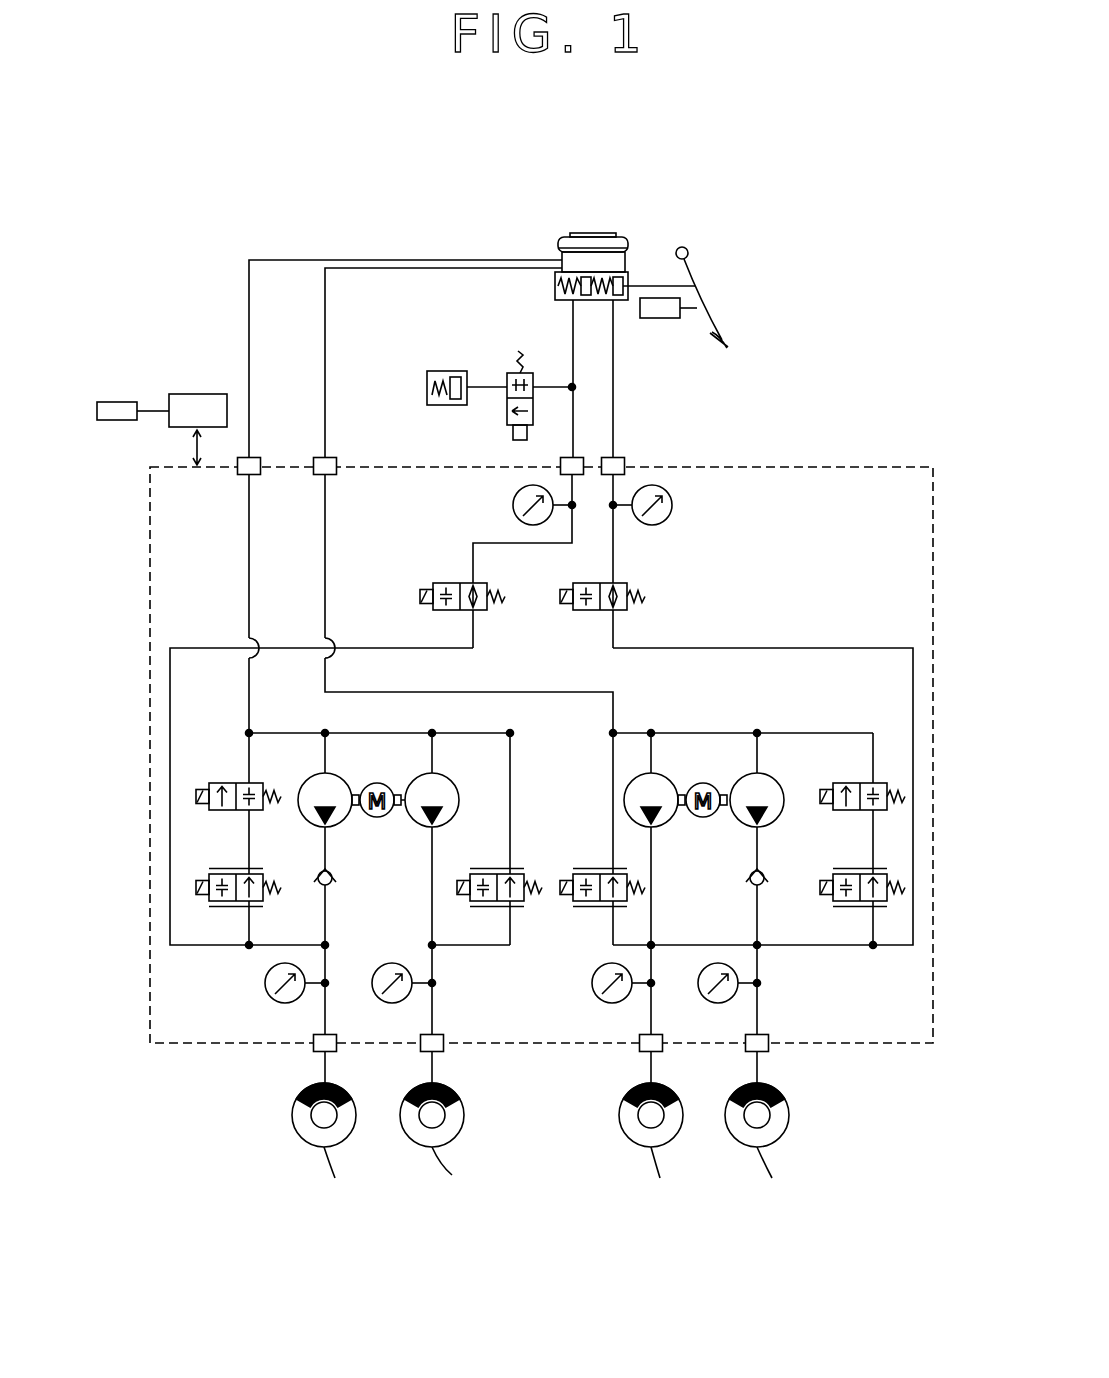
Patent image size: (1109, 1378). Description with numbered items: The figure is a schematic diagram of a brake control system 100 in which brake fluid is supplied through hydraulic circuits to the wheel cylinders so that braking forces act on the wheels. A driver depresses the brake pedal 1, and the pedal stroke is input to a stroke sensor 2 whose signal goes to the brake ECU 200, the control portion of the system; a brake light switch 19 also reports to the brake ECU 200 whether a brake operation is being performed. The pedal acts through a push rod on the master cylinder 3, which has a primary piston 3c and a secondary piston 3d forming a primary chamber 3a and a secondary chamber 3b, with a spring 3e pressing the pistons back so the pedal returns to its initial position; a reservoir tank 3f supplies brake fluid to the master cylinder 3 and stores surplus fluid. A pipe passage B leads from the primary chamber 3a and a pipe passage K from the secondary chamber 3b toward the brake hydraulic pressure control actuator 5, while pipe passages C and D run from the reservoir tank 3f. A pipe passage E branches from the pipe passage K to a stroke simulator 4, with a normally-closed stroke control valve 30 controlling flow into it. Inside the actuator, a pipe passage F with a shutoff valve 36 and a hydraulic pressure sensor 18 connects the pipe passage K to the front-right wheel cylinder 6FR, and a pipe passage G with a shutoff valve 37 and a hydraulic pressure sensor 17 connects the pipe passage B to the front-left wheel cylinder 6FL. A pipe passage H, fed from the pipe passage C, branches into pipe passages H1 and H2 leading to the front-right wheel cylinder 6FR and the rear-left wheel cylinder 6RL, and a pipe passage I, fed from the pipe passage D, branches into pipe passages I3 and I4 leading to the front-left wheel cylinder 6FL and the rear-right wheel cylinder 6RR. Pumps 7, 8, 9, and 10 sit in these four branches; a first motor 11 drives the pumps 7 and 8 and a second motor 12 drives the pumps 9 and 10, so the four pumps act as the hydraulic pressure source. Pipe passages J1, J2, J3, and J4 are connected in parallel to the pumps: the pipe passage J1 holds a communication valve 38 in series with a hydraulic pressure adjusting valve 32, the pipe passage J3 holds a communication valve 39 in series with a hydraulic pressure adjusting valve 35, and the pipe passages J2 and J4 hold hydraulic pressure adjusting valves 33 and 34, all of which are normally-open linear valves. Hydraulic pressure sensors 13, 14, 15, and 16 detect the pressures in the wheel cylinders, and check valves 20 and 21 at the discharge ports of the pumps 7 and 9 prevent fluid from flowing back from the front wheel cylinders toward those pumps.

The brake control system 100 is at (813, 192).
The brake pedal 1 is at (730, 343).
The stroke sensor 2 is at (672, 318).
The master cylinder 3 is at (608, 271).
The primary chamber 3a is at (612, 300).
The secondary chamber 3b is at (558, 290).
The primary piston 3c is at (628, 284).
The secondary piston 3d is at (583, 300).
The spring 3e is at (596, 300).
The reservoir tank 3f is at (590, 236).
The stroke simulator 4 is at (447, 371).
The brake hydraulic pressure control actuator 5 is at (775, 467).
The pump 7 is at (330, 828).
The pump 8 is at (440, 828).
The pump 9 is at (762, 828).
The pump 10 is at (656, 828).
The first motor 11 is at (378, 820).
The second motor 12 is at (704, 820).
The hydraulic pressure sensor 13 is at (265, 993).
The hydraulic pressure sensor 14 is at (372, 993).
The hydraulic pressure sensor 15 is at (592, 993).
The hydraulic pressure sensor 16 is at (700, 993).
The hydraulic pressure sensor 17 is at (673, 505).
The hydraulic pressure sensor 18 is at (512, 505).
The brake light switch 19 is at (110, 402).
The check valve 20 is at (333, 882).
The check valve 21 is at (750, 882).
The stroke control valve 30 is at (507, 408).
The hydraulic pressure adjusting valve 32 is at (200, 901).
The hydraulic pressure adjusting valve 33 is at (470, 901).
The hydraulic pressure adjusting valve 34 is at (571, 901).
The hydraulic pressure adjusting valve 35 is at (834, 901).
The shutoff valve 36 is at (445, 583).
The shutoff valve 37 is at (630, 583).
The communication valve 38 is at (200, 783).
The communication valve 39 is at (833, 783).
The brake ECU 200 is at (195, 394).
The front-right wheel cylinder 6FR is at (346, 1088).
The rear-left wheel cylinder 6RL is at (455, 1088).
The rear-right wheel cylinder 6RR is at (672, 1088).
The front-left wheel cylinder 6FL is at (780, 1088).
The pipe passage B is at (613, 445).
The pipe passage C is at (372, 268).
The pipe passage D is at (380, 275).
The pipe passage E is at (572, 408).
The pipe passage K is at (613, 400).
The pipe passage F is at (205, 648).
The pipe passage G is at (770, 648).
The pipe passage H is at (249, 552).
The pipe passage I is at (325, 552).
The pipe passage H1 is at (325, 758).
The pipe passage H2 is at (432, 758).
The pipe passage I3 is at (757, 758).
The pipe passage I4 is at (651, 758).
The pipe passage J1 is at (249, 843).
The pipe passage J2 is at (510, 760).
The pipe passage J3 is at (873, 843).
The pipe passage J4 is at (613, 843).